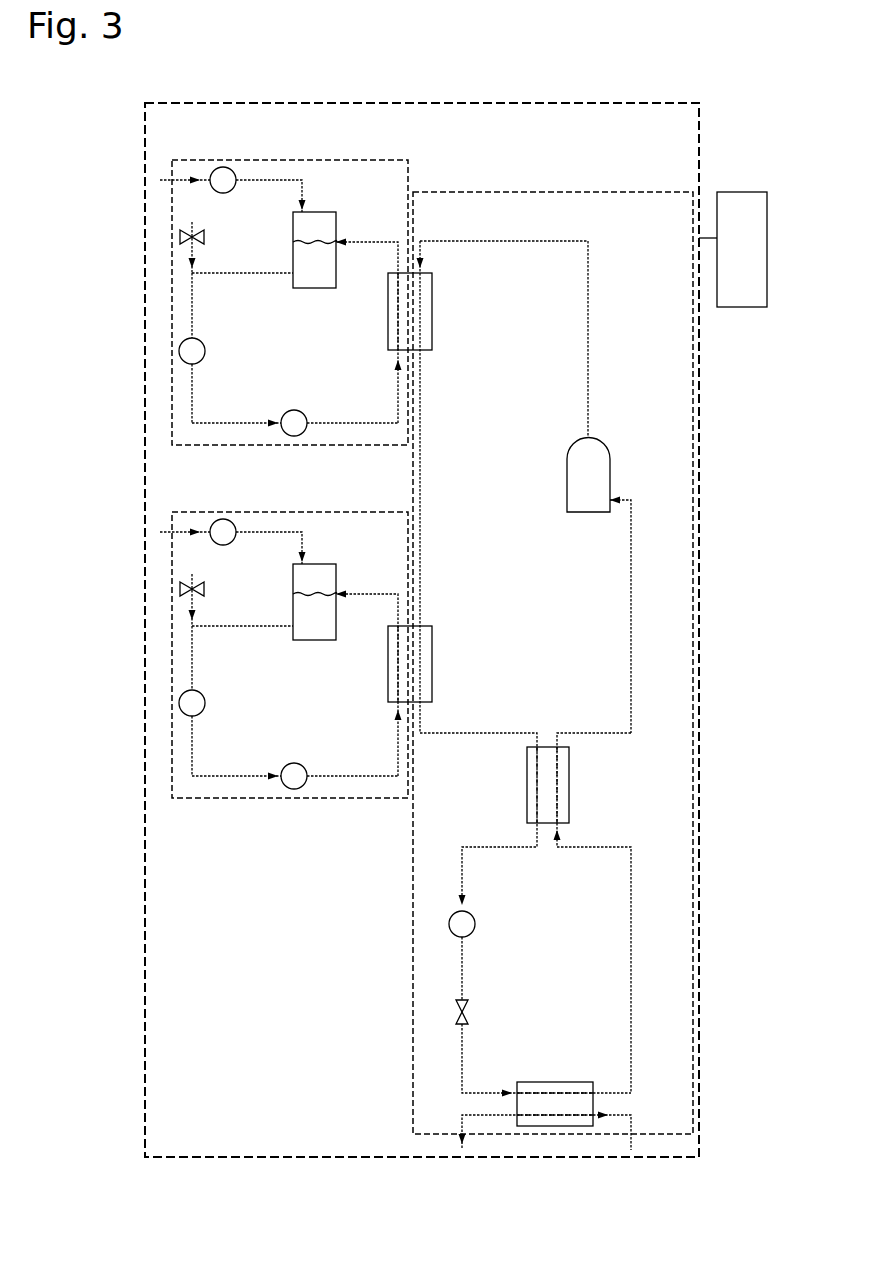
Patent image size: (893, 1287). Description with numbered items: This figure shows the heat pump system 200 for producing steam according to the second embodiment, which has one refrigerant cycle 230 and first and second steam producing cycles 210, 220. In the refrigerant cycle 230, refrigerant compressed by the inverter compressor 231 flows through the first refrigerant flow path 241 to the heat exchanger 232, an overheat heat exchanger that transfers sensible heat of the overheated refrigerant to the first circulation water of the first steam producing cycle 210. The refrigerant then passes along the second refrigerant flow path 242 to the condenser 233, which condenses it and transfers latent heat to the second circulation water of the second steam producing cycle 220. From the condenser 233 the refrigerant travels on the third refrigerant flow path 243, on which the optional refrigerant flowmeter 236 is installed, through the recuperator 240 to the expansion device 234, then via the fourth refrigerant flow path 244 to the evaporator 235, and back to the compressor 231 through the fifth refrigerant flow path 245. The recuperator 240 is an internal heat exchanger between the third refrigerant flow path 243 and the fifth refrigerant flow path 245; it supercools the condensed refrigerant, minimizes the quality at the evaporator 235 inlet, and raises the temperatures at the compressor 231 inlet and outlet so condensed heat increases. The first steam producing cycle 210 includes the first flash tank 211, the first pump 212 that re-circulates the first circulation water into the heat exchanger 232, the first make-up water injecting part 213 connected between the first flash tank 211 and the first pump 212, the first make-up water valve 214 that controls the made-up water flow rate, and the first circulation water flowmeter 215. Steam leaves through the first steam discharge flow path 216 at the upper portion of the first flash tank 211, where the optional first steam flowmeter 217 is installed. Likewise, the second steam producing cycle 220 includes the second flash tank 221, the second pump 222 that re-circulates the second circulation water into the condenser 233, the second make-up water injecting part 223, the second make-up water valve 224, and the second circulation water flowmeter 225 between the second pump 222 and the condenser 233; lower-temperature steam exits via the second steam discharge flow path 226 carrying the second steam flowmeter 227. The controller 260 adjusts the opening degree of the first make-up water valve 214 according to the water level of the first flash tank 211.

The heat pump system for producing steam 200 is at (497, 86).
The first steam producing cycle 210 is at (377, 160).
The first flash tank 211 is at (328, 212).
The first pump 212 is at (207, 350).
The first make-up water injecting part 213 is at (194, 253).
The first make-up water valve 214 is at (199, 236).
The first circulation water flowmeter 215 is at (294, 409).
The first steam discharge flow path 216 is at (287, 178).
The first steam flowmeter 217 is at (223, 166).
The second steam producing cycle 220 is at (360, 512).
The second flash tank 221 is at (328, 564).
The second pump 222 is at (207, 702).
The second make-up water injecting part 223 is at (194, 605).
The second make-up water valve 224 is at (199, 588).
The second circulation water flowmeter 225 is at (294, 761).
The second steam discharge flow path 226 is at (287, 530).
The second steam flowmeter 227 is at (223, 518).
The refrigerant cycle 230 is at (616, 192).
The compressor 231 is at (604, 443).
The heat exchanger 232 is at (432, 313).
The condenser 233 is at (433, 665).
The expansion device 234 is at (467, 1017).
The evaporator 235 is at (565, 1082).
The refrigerant flowmeter 236 is at (475, 924).
The recuperator 240 is at (569, 785).
The first refrigerant flow path 241 is at (507, 241).
The second refrigerant flow path 242 is at (421, 455).
The third refrigerant flow path 243 is at (493, 733).
The fourth refrigerant flow path 244 is at (463, 1073).
The fifth refrigerant flow path 245 is at (607, 733).
The controller 260 is at (735, 192).